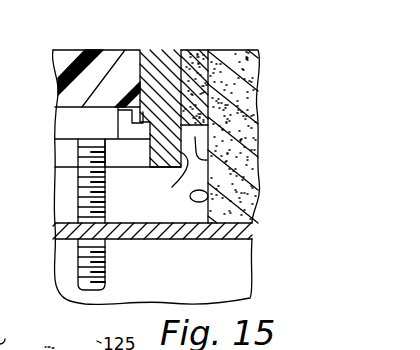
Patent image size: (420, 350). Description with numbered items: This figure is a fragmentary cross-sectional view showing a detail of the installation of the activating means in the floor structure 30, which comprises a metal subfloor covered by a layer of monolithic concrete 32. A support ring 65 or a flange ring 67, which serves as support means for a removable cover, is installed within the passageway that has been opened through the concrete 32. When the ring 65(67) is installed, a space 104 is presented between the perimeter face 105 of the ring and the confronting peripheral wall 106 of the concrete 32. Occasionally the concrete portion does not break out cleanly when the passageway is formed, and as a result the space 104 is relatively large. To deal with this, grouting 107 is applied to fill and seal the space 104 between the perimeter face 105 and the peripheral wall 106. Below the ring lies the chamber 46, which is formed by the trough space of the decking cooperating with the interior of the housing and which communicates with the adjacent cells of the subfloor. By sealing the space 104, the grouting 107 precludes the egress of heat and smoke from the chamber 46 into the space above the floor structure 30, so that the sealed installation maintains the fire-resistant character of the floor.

The floor structure 30 is at (262, 44).
The concrete 32 is at (256, 86).
The chamber 46 is at (218, 270).
The support ring 65 is at (117, 57).
The flange ring 67 is at (96, 78).
The space 104 is at (252, 178).
The perimeter face 105 is at (172, 187).
The peripheral wall 106 is at (208, 200).
The grouting 107 is at (200, 50).